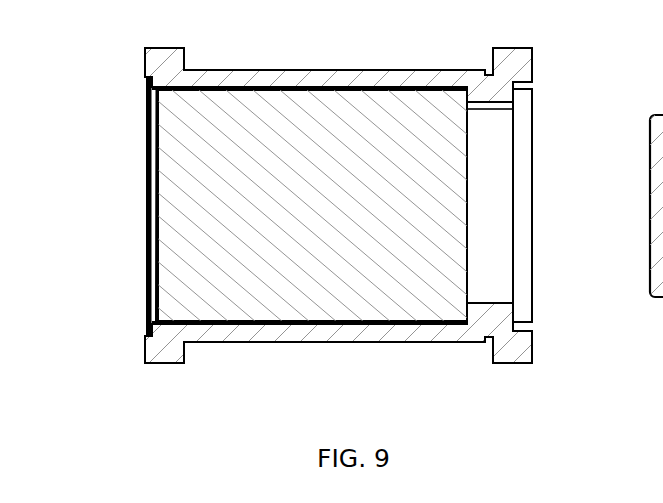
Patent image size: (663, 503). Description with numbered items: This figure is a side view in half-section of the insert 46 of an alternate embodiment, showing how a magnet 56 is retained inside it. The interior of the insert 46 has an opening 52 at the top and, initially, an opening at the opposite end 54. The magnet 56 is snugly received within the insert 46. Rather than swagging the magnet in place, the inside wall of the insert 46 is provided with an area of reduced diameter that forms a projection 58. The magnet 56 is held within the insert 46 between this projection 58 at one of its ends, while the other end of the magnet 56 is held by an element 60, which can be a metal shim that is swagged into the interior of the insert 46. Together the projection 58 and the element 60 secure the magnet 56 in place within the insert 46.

The insert 46 is at (262, 344).
The opening 52 is at (533, 225).
The opposite end 54 is at (146, 108).
The magnet 56 is at (333, 305).
The projection 58 is at (472, 100).
The element 60 is at (147, 263).